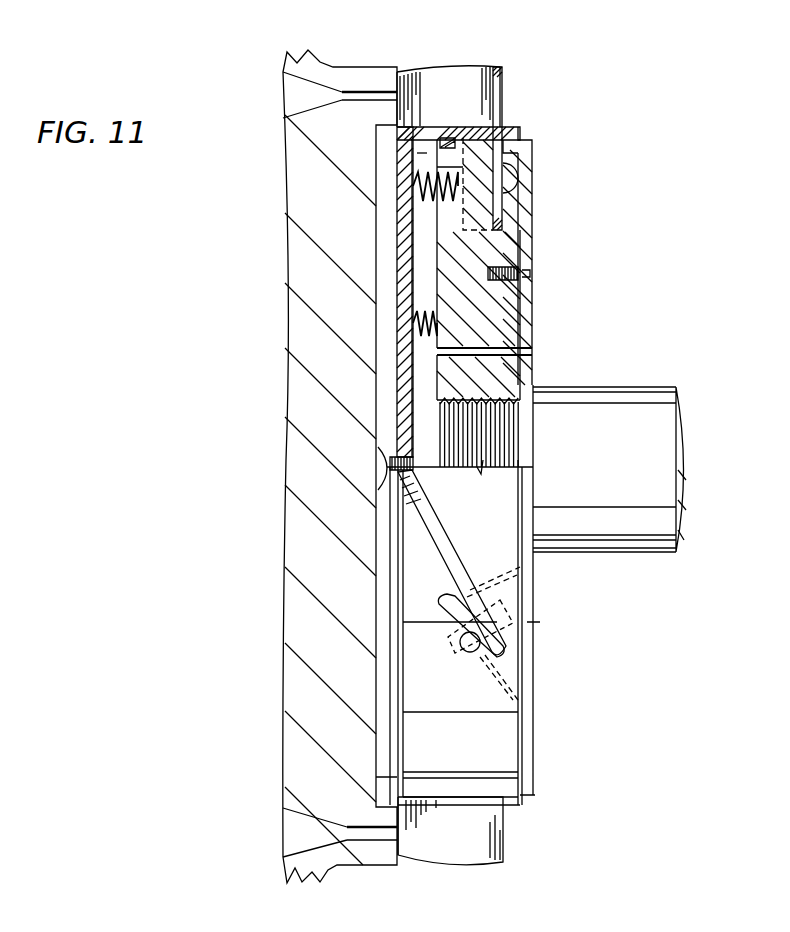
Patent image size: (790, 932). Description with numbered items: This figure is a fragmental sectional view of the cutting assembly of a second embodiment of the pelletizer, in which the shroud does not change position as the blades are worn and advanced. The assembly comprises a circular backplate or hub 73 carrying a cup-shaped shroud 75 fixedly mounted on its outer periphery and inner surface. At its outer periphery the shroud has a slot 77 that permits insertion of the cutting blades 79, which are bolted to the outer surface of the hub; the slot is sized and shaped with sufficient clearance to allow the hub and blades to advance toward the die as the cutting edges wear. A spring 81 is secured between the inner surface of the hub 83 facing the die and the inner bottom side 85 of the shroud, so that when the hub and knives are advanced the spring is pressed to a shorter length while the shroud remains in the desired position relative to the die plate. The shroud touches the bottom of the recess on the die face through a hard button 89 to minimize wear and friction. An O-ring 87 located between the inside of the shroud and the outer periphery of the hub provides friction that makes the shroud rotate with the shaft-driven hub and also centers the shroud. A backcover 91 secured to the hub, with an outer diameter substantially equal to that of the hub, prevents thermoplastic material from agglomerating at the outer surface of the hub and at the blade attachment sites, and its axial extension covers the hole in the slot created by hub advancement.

The hub 73 is at (492, 318).
The cup-shaped shroud 75 is at (407, 160).
The slot 77 is at (493, 123).
The cutting blades 79 is at (490, 67).
The spring 81 is at (417, 207).
The inner surface of the hub 83 is at (437, 245).
The inner bottom side of the shroud 85 is at (513, 147).
The O-ring 87 is at (442, 136).
The hard button 89 is at (382, 468).
The backcover 91 is at (530, 680).